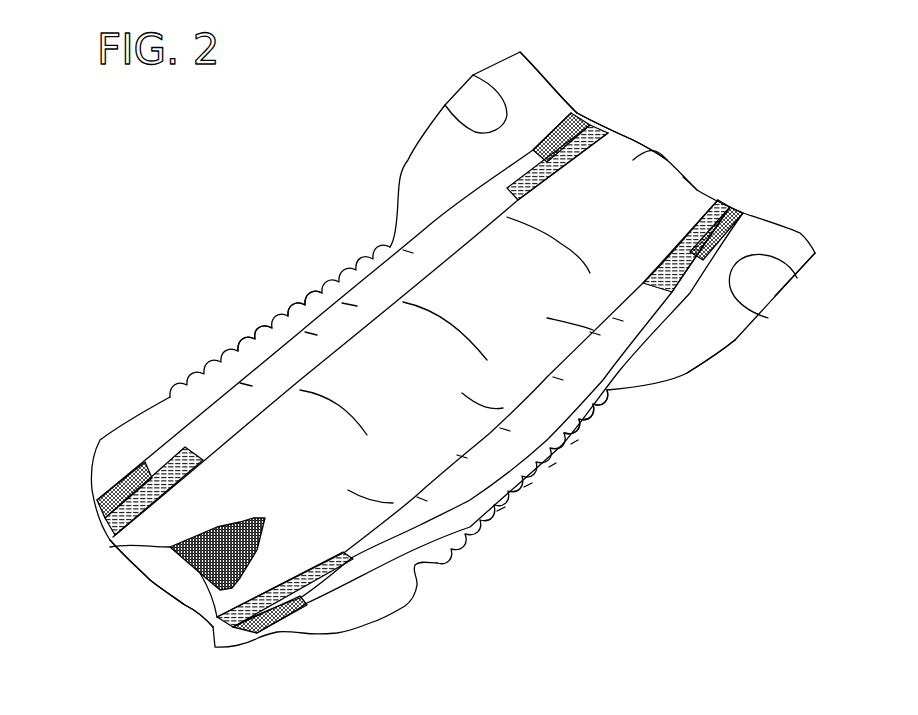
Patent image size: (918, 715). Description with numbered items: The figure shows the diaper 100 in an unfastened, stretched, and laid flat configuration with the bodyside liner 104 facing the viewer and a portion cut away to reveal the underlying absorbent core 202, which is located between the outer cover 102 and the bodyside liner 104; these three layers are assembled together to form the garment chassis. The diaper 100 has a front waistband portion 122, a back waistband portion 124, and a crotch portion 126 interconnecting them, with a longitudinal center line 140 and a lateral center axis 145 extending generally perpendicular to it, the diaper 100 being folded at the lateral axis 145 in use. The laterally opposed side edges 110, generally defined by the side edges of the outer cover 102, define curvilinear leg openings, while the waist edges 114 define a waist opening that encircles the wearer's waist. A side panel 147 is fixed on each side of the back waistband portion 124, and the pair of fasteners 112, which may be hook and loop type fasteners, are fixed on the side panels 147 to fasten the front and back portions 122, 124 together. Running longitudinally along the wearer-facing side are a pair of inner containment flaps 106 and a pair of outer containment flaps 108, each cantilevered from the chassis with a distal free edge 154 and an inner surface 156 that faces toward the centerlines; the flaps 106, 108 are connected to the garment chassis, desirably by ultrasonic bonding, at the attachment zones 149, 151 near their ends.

The diaper 100 is at (813, 222).
The outer cover 102 is at (163, 577).
The bodyside liner 104 is at (652, 150).
The inner containment flaps 106 is at (368, 290).
The outer containment flaps 108 is at (205, 490).
The side edges 110 is at (265, 330).
The fasteners 112 is at (460, 92).
The waist edges 114 is at (633, 160).
The front waistband portion 122 is at (197, 430).
The back waistband portion 124 is at (730, 335).
The crotch portion 126 is at (263, 347).
The longitudinal center line 140 is at (685, 137).
The lateral center axis 145 is at (312, 297).
The side panels 147 is at (533, 67).
The attachment zones 149 is at (603, 127).
The attachment zones 151 is at (580, 113).
The distal free edge 154 is at (440, 220).
The inner surface 156 is at (345, 330).
The absorbent core 202 is at (203, 573).